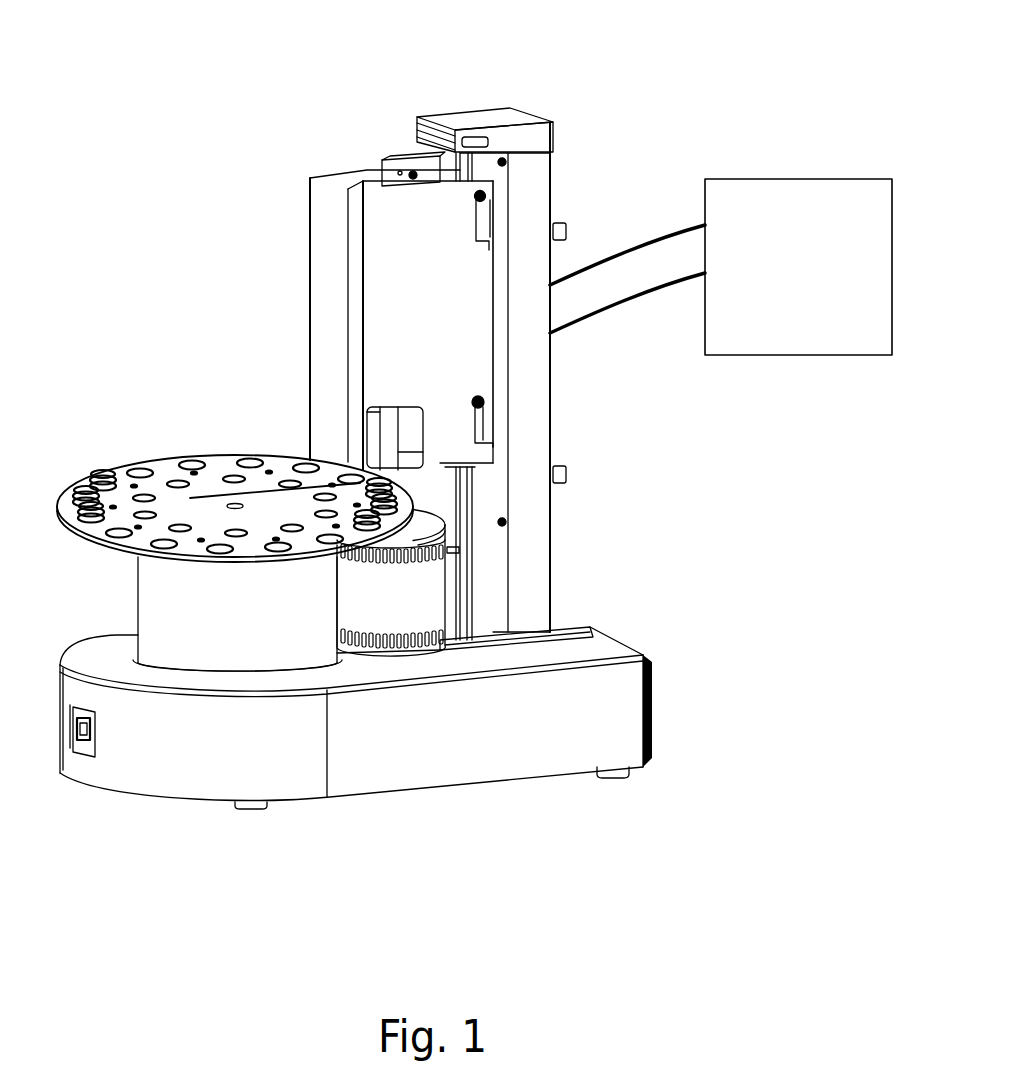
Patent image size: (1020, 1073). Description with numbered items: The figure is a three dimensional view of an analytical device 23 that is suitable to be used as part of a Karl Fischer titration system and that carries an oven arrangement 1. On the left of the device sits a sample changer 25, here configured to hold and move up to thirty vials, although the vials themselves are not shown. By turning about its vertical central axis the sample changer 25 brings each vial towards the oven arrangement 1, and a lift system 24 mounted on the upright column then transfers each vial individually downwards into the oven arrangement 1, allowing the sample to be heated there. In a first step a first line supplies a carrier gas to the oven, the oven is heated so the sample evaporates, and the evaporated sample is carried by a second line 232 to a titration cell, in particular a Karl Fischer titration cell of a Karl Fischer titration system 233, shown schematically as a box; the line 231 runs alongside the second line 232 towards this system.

The oven arrangement 1 is at (418, 613).
The analytical device 23 is at (200, 290).
The lift system 24 is at (325, 247).
The sample changer 25 is at (168, 498).
The cable 231 is at (613, 260).
The second line 232 is at (595, 315).
The Karl Fischer titration system 233 is at (792, 287).